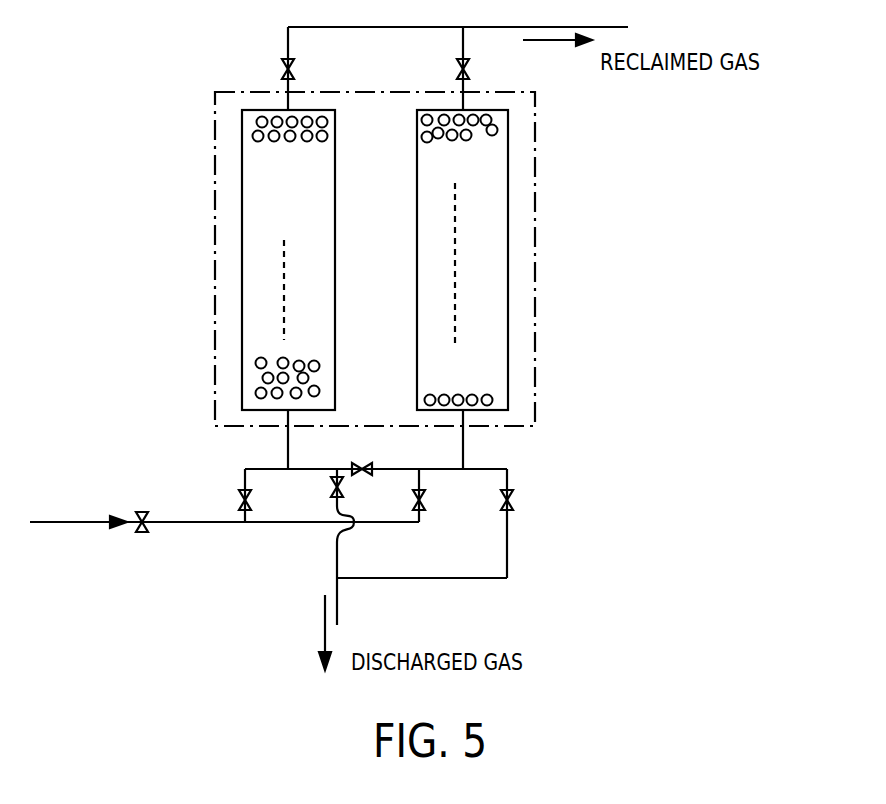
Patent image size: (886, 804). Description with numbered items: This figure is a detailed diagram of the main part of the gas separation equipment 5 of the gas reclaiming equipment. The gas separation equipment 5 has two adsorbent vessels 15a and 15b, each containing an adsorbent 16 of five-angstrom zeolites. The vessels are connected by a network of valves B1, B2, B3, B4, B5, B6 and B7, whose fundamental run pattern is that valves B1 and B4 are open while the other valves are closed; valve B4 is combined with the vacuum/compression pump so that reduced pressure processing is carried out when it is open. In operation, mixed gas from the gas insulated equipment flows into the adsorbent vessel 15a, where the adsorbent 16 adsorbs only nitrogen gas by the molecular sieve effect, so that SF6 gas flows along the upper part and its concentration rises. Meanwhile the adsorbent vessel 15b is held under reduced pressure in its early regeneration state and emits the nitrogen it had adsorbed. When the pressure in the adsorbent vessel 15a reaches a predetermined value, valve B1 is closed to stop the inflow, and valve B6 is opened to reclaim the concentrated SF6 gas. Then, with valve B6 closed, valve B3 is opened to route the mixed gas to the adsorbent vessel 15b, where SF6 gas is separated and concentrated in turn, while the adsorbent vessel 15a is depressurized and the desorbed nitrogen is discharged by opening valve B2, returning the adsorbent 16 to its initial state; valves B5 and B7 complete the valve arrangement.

The gas separation equipment 5 is at (536, 158).
The adsorbent vessel 15a is at (320, 231).
The adsorbent vessel 15b is at (485, 228).
The adsorbent 16 is at (494, 400).
The valve B1 is at (253, 503).
The valve B2 is at (343, 491).
The valve B3 is at (427, 500).
The valve B4 is at (515, 500).
The valve B5 is at (370, 467).
The valve B6 is at (294, 71).
The valve B7 is at (469, 71).